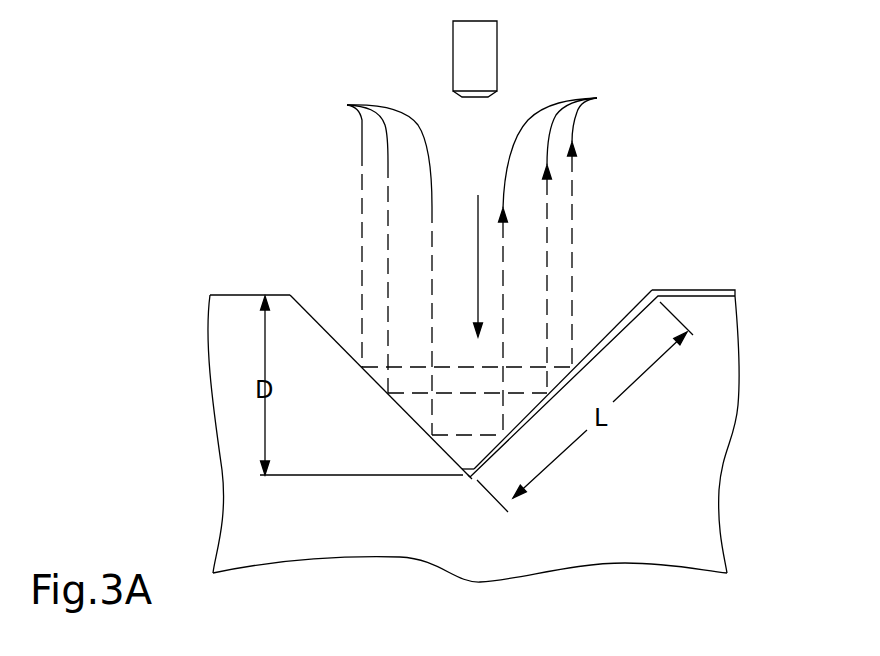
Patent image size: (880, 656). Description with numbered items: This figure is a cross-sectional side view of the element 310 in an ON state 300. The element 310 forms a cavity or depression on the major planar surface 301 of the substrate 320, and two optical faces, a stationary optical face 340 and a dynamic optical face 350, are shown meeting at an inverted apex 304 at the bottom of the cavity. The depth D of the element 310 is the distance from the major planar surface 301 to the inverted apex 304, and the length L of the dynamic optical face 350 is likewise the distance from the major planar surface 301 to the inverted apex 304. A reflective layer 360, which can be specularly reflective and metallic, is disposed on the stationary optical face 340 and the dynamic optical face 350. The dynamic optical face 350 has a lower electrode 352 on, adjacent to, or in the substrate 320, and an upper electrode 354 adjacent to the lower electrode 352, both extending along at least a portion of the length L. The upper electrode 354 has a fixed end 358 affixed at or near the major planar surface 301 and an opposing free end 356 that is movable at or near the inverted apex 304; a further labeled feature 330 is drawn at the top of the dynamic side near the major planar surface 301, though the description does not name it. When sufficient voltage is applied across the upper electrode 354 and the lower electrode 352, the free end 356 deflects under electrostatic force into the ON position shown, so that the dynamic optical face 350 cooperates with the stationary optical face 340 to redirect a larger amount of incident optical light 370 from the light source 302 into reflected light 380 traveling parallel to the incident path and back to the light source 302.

The ON state 300 is at (236, 215).
The major planar surface 301 is at (216, 294).
The light source 302 is at (497, 53).
The inverted apex 304 is at (473, 480).
The element 310 is at (470, 253).
The substrate 320 is at (457, 551).
The top surface film 330 is at (734, 280).
The stationary optical face 340 is at (320, 318).
The dynamic optical face 350 is at (638, 296).
The lower electrode 352 is at (535, 457).
The upper electrode 354 is at (628, 290).
The free end 356 is at (463, 468).
The fixed end 358 is at (652, 290).
The reflective layer 360 is at (342, 325).
The incident optical light 370 is at (431, 264).
The reflected light 380 is at (577, 262).